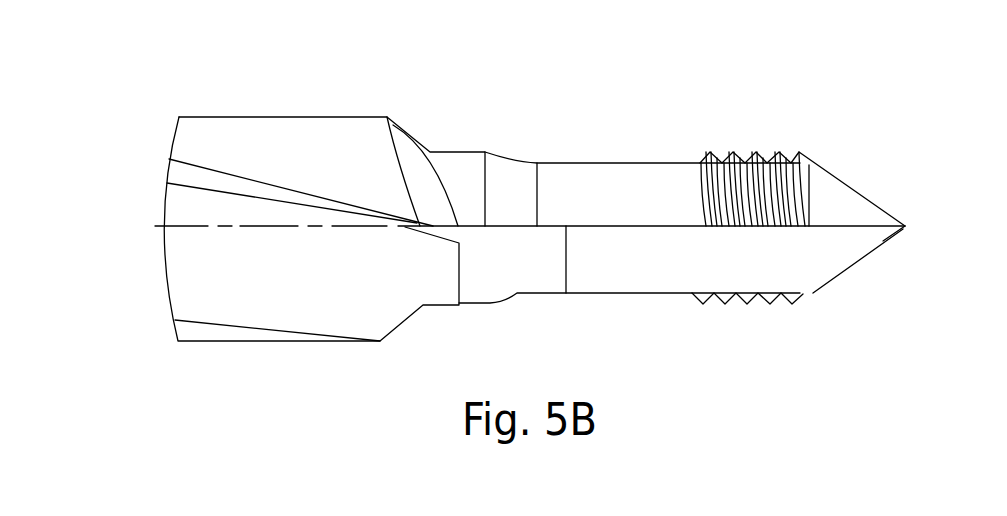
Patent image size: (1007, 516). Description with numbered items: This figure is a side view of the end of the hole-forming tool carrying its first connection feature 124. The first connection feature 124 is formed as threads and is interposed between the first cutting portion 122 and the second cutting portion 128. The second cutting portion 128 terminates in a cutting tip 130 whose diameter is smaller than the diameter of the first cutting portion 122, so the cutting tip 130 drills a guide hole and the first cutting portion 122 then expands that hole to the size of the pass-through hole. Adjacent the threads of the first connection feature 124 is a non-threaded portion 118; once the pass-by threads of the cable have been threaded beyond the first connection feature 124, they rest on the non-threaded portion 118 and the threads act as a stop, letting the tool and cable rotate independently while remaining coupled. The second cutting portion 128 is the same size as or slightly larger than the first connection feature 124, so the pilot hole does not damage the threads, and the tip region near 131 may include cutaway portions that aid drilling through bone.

The first cutting portion 122 is at (312, 68).
The non-threaded portion 118 is at (647, 180).
The first connection feature 124 is at (768, 162).
The second cutting portion 128 is at (881, 207).
The cutting tip 130 is at (835, 205).
The tip flute edge 131 is at (840, 252).